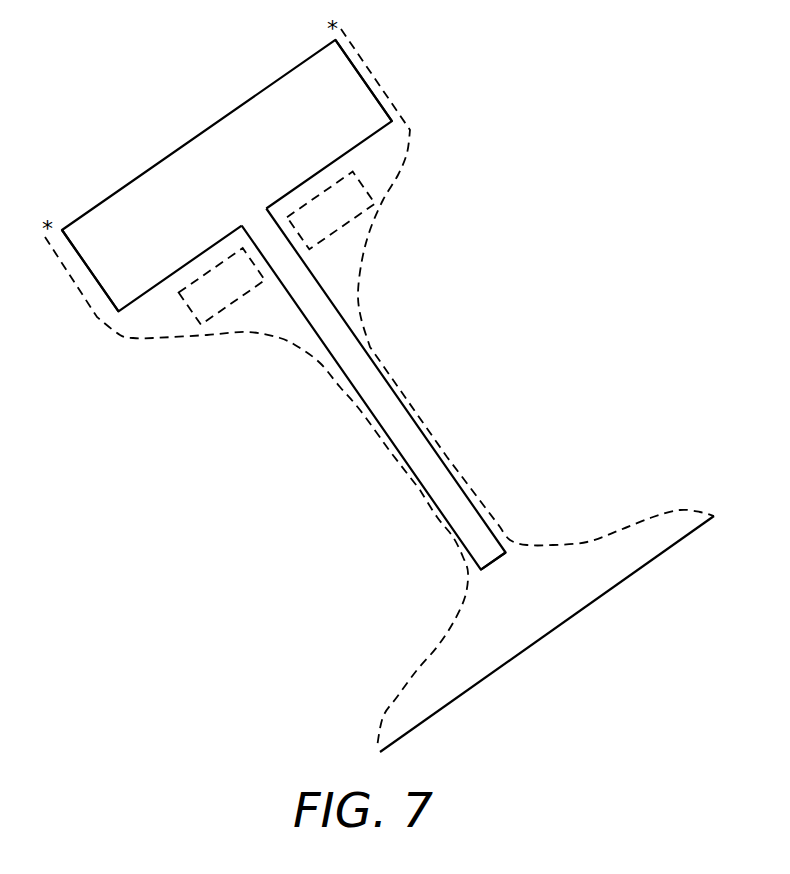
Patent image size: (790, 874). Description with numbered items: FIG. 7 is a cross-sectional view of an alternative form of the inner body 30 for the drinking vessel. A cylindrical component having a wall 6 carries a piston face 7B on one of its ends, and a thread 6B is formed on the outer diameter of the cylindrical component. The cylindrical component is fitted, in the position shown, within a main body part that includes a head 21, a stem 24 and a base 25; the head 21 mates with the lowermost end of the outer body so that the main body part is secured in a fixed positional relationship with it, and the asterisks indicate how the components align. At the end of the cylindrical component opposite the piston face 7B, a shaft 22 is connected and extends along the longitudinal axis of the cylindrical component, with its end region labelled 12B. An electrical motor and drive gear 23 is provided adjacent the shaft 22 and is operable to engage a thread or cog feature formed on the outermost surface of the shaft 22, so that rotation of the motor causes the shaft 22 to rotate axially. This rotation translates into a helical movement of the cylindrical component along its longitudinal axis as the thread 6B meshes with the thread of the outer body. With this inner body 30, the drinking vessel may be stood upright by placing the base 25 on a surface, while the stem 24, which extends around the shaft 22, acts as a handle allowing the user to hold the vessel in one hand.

The wall 6 is at (63, 249).
The thread 6B is at (353, 68).
The piston face 7B is at (210, 127).
The end of stem 12B is at (497, 562).
The head 21 is at (75, 296).
The shaft 22 is at (433, 453).
The motor and drive gear 23 is at (204, 326).
The stem 24 is at (414, 402).
The base 25 is at (613, 588).
The inner body 30 is at (477, 252).